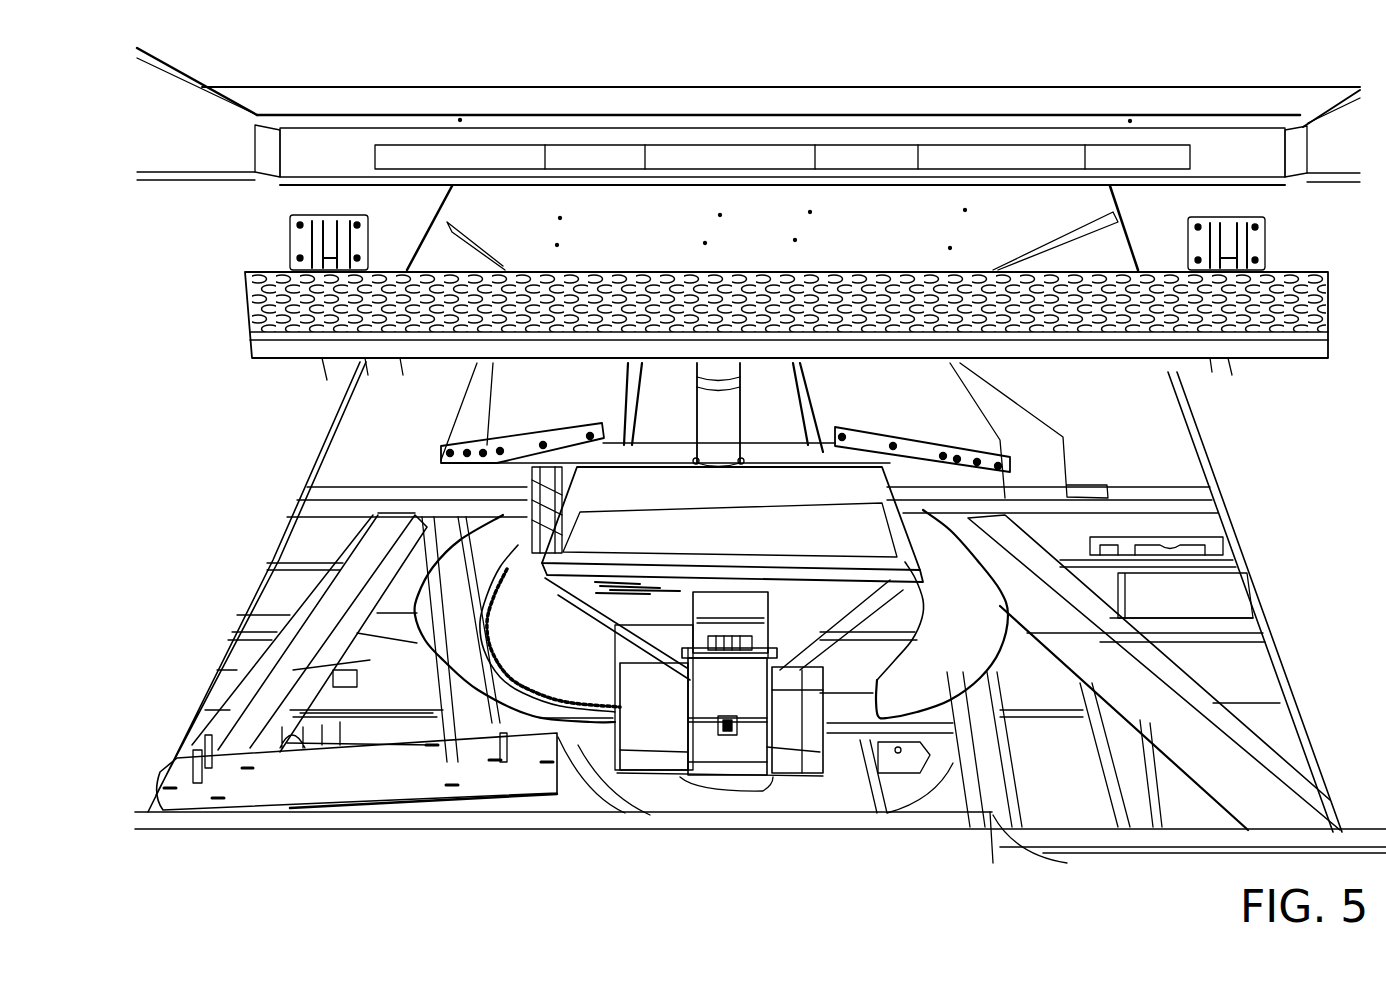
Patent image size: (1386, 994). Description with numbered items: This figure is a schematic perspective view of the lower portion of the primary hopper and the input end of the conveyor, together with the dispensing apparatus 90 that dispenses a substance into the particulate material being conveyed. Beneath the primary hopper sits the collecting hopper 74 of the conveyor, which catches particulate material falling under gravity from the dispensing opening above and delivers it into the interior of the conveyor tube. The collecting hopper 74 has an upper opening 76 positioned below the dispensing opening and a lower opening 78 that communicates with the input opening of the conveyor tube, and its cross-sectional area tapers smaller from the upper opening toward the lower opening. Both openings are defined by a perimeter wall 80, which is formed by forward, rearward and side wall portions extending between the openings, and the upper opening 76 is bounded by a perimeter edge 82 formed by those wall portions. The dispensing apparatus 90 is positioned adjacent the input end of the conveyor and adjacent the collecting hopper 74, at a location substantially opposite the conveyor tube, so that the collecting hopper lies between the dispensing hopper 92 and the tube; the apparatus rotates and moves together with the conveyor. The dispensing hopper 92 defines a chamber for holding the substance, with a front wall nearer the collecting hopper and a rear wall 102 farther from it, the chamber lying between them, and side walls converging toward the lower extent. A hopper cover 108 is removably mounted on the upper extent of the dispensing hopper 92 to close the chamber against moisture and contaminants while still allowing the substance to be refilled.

The collecting hopper 74 is at (440, 416).
The upper opening 76 is at (998, 432).
The lower opening 78 is at (613, 387).
The perimeter wall 80 is at (473, 395).
The perimeter edge 82 is at (990, 403).
The dispensing apparatus 90 is at (935, 588).
The dispensing hopper 92 is at (818, 600).
The rear wall 102 is at (788, 625).
The hopper cover 108 is at (843, 522).